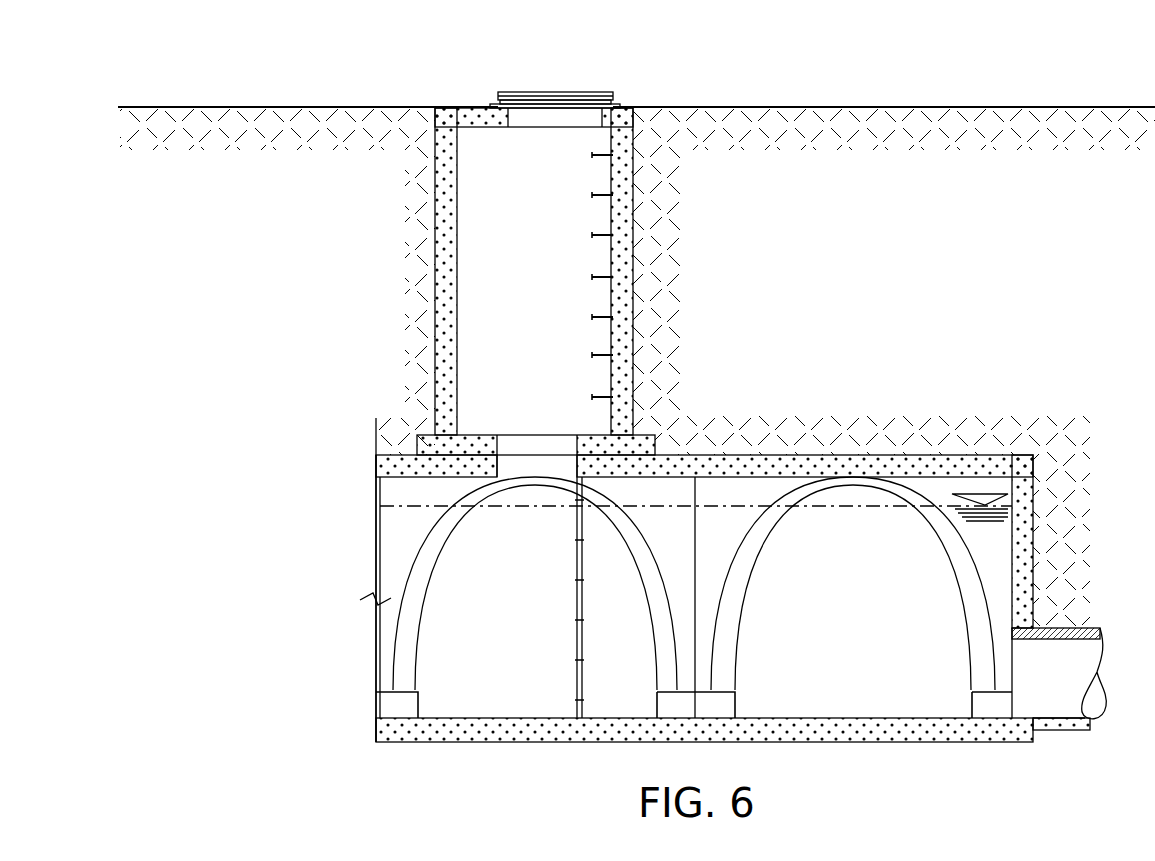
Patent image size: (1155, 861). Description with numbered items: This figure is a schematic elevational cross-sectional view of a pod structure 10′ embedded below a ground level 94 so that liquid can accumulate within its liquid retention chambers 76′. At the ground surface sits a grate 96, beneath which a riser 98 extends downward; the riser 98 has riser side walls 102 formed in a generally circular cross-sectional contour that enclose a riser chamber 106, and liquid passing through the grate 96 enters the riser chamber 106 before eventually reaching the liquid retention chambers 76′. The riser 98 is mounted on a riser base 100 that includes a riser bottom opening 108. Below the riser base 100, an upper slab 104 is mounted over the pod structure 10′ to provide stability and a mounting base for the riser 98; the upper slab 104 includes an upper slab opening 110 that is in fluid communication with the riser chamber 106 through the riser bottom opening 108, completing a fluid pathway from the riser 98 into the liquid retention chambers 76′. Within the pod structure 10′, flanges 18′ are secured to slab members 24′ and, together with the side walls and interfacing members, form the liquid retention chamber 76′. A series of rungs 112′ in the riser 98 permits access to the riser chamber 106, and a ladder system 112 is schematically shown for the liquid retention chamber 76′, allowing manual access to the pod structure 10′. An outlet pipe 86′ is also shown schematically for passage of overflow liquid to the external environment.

The pod structure 10′ is at (288, 503).
The flanges 18′ is at (433, 585).
The slab members 24′ is at (855, 742).
The liquid retention chamber 76′ is at (473, 692).
The outlet pipe 86′ is at (1072, 628).
The ground level 94 is at (795, 107).
The grate 96 is at (565, 92).
The riser 98 is at (633, 201).
The riser base 100 is at (652, 435).
The riser side walls 102 is at (633, 287).
The upper slab 104 is at (860, 458).
The riser chamber 106 is at (549, 289).
The riser bottom opening 108 is at (495, 450).
The upper slab opening 110 is at (577, 463).
The ladder system 112 is at (577, 660).
The rungs 112′ is at (595, 195).